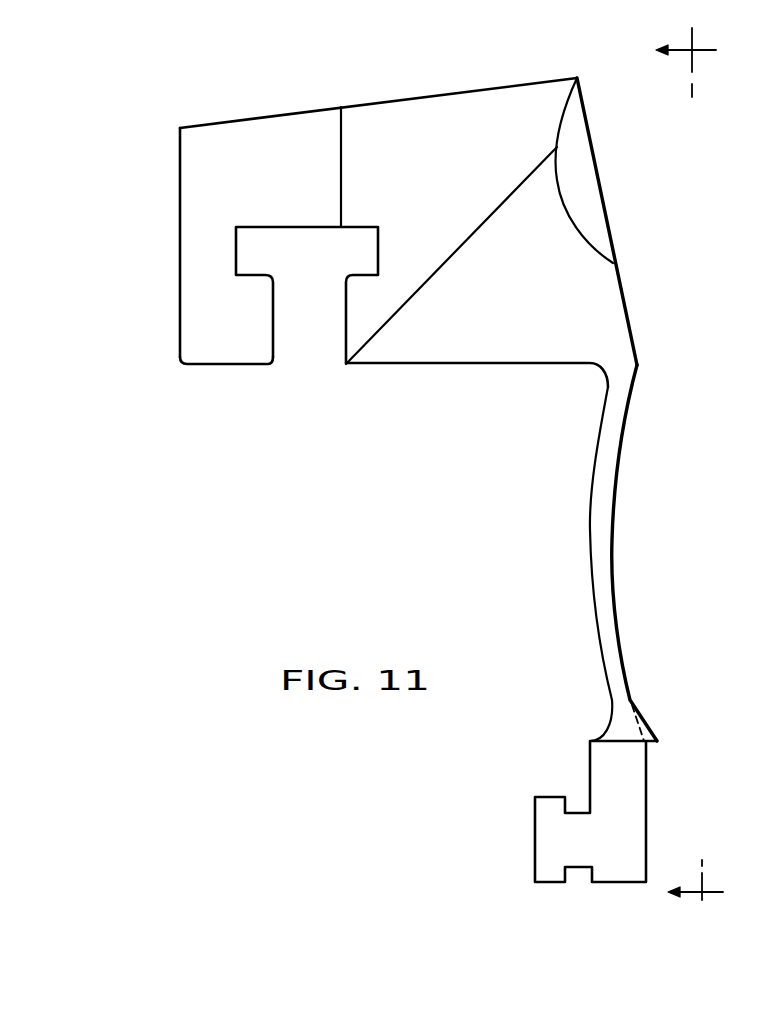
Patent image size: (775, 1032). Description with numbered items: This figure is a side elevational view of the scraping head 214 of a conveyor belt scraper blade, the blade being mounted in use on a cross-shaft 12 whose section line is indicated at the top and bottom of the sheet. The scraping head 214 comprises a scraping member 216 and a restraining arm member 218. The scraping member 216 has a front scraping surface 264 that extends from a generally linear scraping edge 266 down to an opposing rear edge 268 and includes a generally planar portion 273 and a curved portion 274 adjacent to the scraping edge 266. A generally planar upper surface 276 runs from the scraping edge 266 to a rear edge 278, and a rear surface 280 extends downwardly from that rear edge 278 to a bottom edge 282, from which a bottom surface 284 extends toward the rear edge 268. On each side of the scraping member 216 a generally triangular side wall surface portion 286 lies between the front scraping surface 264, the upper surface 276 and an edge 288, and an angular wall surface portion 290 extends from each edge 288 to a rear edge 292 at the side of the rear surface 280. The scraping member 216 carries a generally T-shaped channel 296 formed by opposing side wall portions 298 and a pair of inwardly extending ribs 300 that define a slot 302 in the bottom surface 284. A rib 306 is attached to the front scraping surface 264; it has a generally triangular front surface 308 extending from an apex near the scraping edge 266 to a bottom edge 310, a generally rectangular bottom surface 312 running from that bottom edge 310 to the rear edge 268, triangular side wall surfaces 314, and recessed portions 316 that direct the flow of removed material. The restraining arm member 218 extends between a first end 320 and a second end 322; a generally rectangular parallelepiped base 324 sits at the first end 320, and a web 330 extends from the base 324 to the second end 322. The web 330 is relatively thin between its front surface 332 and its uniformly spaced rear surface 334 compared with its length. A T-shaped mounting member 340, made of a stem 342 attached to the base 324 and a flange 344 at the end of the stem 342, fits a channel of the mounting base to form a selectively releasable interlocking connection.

The cross-shaft 12 is at (697, 470).
The scraping head 214 is at (446, 476).
The scraping member 216 is at (293, 113).
The restraining arm member 218 is at (612, 541).
The front scraping surface 264 is at (463, 242).
The scraping edge 266 is at (580, 78).
The rear edge of front scraping surface 268 is at (346, 363).
The planar portion 273 is at (487, 218).
The curved portion 274 is at (568, 117).
The upper surface 276 is at (444, 92).
The rear edge of upper surface 278 is at (180, 128).
The rear surface 280 is at (180, 228).
The bottom edge 282 is at (180, 357).
The bottom surface 284 is at (237, 366).
The triangular side wall surface portion 286 is at (427, 128).
The edge 288 is at (343, 155).
The angular wall surface portion 290 is at (220, 170).
The rear edge of angular wall surface portion 292 is at (180, 195).
The T-shaped channel 296 is at (227, 320).
The side wall portions 298 is at (218, 290).
The ribs 300 is at (355, 311).
The slot 302 is at (303, 365).
The rib 306 is at (589, 280).
The front surface of rib 308 is at (605, 212).
The bottom edge of rib front surface 310 is at (640, 365).
The bottom surface of rib 312 is at (476, 363).
The side wall surfaces of rib 314 is at (588, 308).
The recessed portions 316 is at (573, 173).
The first end of restraining arm member 320 is at (648, 793).
The second end of restraining arm member 322 is at (640, 367).
The base 324 is at (627, 833).
The web 330 is at (603, 587).
The front surface of web 332 is at (617, 483).
The rear surface of web 334 is at (593, 477).
The T-shaped mounting member 340 is at (535, 843).
The stem 342 is at (575, 853).
The flange 344 is at (545, 862).